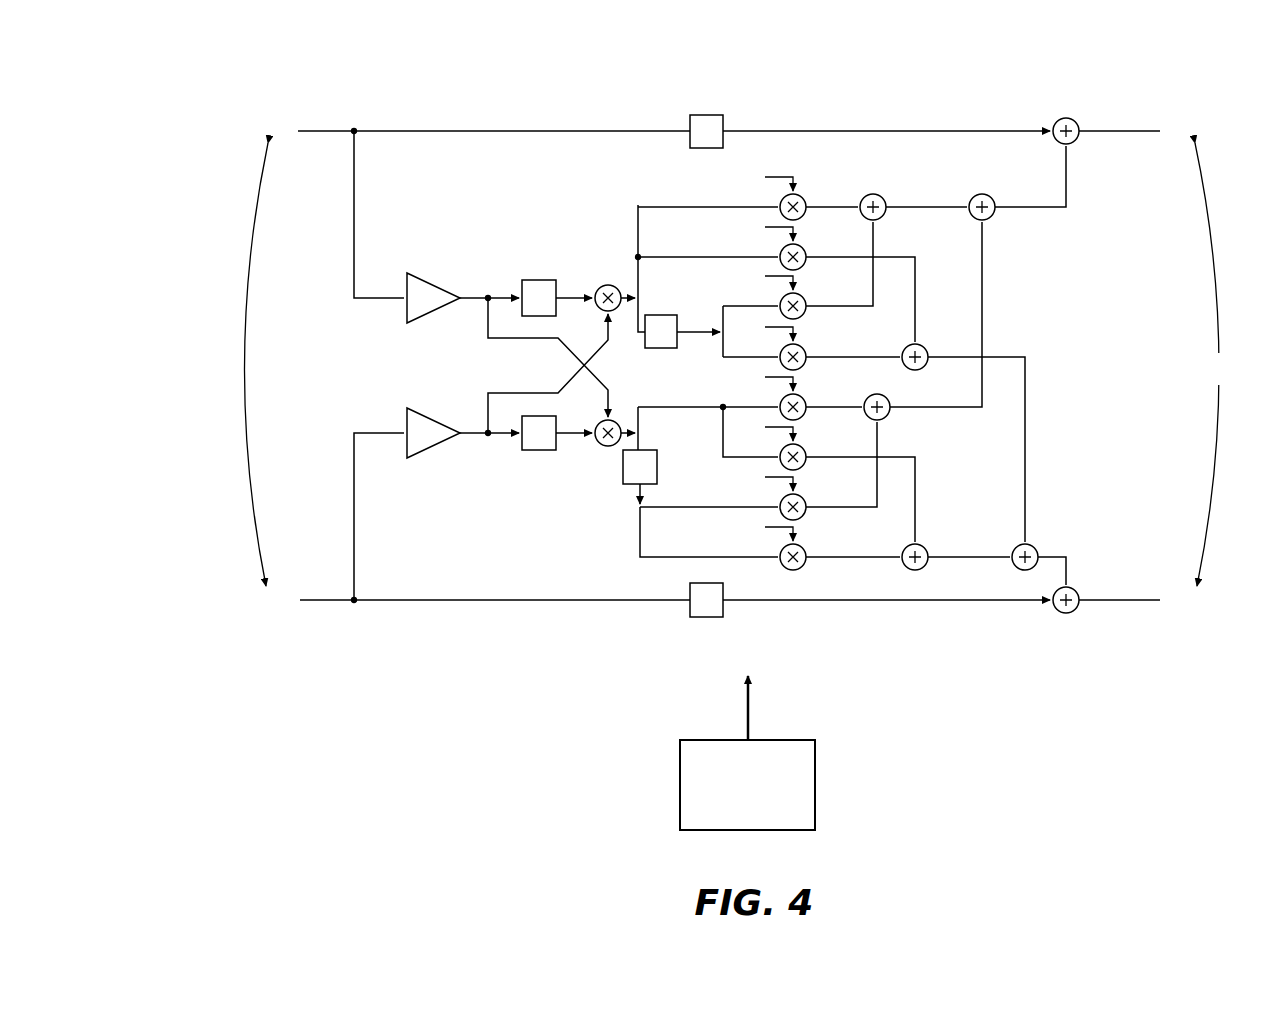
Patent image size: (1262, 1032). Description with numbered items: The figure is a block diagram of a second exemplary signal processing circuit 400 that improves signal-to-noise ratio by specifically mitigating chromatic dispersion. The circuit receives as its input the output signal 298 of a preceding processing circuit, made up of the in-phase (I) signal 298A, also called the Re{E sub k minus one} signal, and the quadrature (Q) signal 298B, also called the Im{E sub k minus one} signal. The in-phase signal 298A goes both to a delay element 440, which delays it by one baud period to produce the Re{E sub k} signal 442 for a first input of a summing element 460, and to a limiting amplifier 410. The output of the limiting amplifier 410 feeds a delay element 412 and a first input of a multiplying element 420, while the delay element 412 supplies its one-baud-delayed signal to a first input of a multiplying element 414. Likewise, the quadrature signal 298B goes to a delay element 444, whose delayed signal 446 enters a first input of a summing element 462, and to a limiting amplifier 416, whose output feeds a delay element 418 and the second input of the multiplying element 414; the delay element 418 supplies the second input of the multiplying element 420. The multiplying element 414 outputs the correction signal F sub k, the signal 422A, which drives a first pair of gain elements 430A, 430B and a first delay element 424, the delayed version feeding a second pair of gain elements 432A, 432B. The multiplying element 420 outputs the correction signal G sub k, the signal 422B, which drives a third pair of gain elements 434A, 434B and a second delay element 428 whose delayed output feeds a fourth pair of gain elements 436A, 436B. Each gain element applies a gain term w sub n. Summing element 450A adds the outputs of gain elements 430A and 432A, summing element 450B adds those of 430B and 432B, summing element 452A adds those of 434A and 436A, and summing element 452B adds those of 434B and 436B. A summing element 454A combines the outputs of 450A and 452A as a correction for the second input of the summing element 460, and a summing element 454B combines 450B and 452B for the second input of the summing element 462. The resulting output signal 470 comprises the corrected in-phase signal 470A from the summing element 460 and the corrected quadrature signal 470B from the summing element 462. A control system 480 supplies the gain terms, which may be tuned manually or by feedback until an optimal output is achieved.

The second exemplary signal processing circuit 400 is at (185, 74).
The output signal 298 is at (247, 364).
The in-phase (I) signal 298A is at (385, 131).
The quadrature (Q) signal 298B is at (398, 600).
The limiting amplifier 410 is at (411, 283).
The delay element 412 is at (533, 280).
The multiplying element 414 is at (606, 284).
The limiting amplifier 416 is at (412, 458).
The delay element 418 is at (537, 452).
The multiplying element 420 is at (611, 449).
The F(k) signal 422A is at (641, 298).
The G(k) signal 422B is at (641, 435).
The first delay element 424 is at (664, 350).
The delay element 428 is at (630, 486).
The gain element 430A is at (803, 197).
The gain element 430B is at (803, 247).
The gain element 432A is at (803, 296).
The gain element 432B is at (803, 347).
The gain element 434A is at (803, 397).
The gain element 434B is at (803, 447).
The gain element 436A is at (803, 497).
The gain element 436B is at (803, 547).
The delay element 440 is at (705, 115).
The Re{E(k)} signal 442 is at (888, 131).
The delay element 444 is at (700, 618).
The delayed signal 446 is at (928, 600).
The summing element 450A is at (886, 197).
The summing element 450B is at (919, 345).
The summing element 452A is at (889, 398).
The summing element 452B is at (921, 547).
The summing element 454A is at (992, 197).
The summing element 454B is at (1031, 547).
The summing element 460 is at (1062, 118).
The summing element 462 is at (1060, 614).
The output signal 470 is at (1223, 364).
The Re{E(k)'} signal 470A is at (1136, 133).
The Im{E(k)'} signal 470B is at (1140, 598).
The control system 480 is at (690, 740).